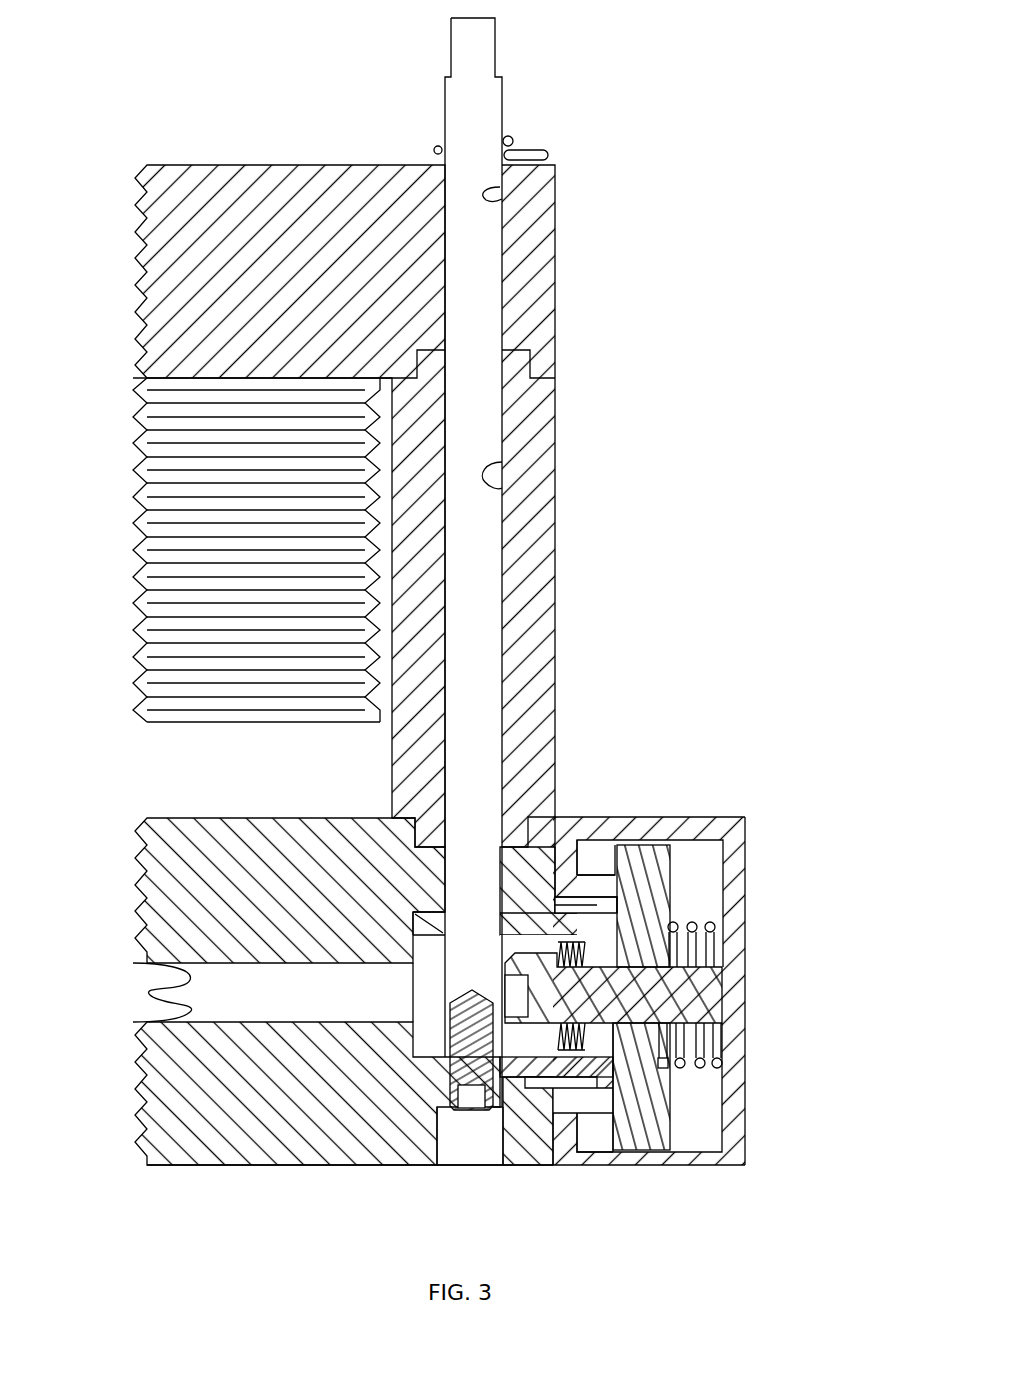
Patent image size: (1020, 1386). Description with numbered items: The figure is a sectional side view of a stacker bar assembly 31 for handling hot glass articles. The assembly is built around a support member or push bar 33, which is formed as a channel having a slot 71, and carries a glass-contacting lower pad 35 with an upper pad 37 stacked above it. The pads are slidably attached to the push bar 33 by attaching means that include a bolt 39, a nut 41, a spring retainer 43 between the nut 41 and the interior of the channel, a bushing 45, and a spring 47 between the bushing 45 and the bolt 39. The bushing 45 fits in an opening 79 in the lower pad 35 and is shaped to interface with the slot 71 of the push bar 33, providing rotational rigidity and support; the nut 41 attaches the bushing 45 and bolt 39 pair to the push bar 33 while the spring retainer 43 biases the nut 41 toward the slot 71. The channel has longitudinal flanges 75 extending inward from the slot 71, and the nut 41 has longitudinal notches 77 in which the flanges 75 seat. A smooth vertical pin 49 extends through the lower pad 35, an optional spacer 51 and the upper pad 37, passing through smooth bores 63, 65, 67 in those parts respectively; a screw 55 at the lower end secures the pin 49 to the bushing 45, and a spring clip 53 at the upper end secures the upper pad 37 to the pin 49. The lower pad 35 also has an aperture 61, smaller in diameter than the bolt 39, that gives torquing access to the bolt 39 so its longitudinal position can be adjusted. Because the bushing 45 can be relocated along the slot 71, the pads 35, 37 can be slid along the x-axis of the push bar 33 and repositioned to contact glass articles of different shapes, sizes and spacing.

The stacker bar assembly 31 is at (647, 125).
The push bar 33 is at (727, 830).
The lower pad 35 is at (182, 815).
The upper pad 37 is at (557, 280).
The bolt 39 is at (700, 988).
The nut 41 is at (660, 882).
The spring retainer 43 is at (710, 925).
The bushing 45 is at (600, 1048).
The spring 47 is at (590, 1040).
The pin 49 is at (480, 601).
The spacer 51 is at (528, 553).
The spring clip 53 is at (512, 138).
The screw 55 is at (458, 1052).
The aperture 61 is at (126, 993).
The bore 63 is at (467, 1175).
The bore 65 is at (502, 462).
The bore 67 is at (500, 187).
The slot 71 is at (612, 1080).
The longitudinal flange 75 is at (603, 870).
The longitudinal notch 77 is at (622, 883).
The opening 79 is at (433, 933).